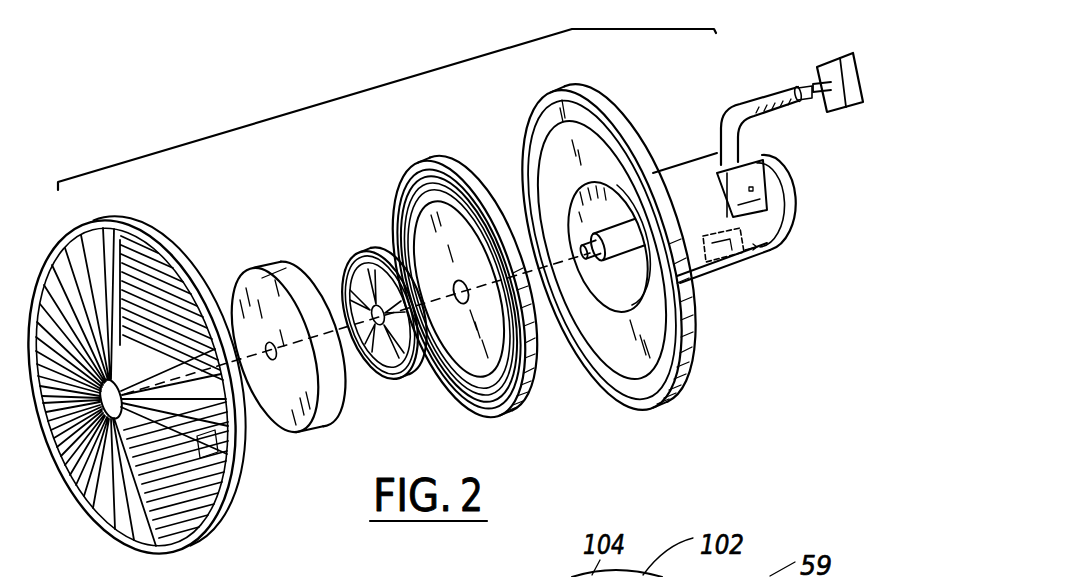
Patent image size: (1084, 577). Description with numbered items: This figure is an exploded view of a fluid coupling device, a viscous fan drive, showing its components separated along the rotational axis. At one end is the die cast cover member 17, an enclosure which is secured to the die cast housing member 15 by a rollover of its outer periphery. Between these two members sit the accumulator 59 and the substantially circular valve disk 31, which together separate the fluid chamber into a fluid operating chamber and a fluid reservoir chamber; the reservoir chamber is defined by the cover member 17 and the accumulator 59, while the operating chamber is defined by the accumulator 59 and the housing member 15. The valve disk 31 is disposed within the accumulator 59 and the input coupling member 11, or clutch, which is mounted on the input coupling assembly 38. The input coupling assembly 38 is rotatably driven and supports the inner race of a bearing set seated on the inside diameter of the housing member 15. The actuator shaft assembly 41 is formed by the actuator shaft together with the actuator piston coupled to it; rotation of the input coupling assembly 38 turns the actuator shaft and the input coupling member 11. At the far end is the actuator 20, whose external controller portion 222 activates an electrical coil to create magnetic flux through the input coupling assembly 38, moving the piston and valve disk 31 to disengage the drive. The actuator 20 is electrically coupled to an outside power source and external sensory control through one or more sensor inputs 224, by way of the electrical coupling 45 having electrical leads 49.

The cover member 17 is at (137, 240).
The accumulator 59 is at (253, 268).
The valve disk 31 is at (361, 253).
The input coupling member 11 is at (440, 163).
The housing member 15 is at (566, 90).
The actuator shaft assembly 41 is at (632, 320).
The input coupling assembly 38 is at (636, 273).
The actuator 20 is at (770, 173).
The external controller portion 222 is at (765, 266).
The electrical coupling 45 is at (752, 97).
The electrical leads 49 is at (810, 100).
The sensor inputs 224 is at (843, 58).